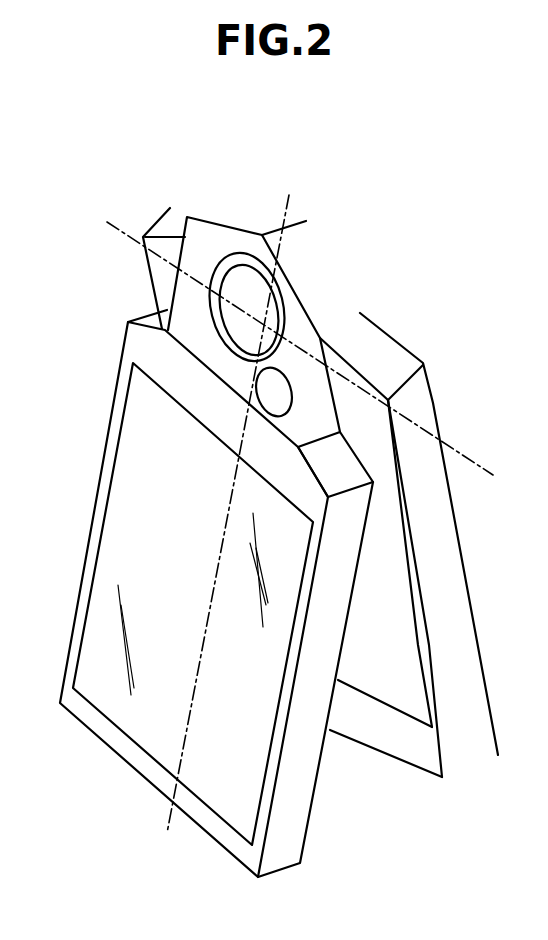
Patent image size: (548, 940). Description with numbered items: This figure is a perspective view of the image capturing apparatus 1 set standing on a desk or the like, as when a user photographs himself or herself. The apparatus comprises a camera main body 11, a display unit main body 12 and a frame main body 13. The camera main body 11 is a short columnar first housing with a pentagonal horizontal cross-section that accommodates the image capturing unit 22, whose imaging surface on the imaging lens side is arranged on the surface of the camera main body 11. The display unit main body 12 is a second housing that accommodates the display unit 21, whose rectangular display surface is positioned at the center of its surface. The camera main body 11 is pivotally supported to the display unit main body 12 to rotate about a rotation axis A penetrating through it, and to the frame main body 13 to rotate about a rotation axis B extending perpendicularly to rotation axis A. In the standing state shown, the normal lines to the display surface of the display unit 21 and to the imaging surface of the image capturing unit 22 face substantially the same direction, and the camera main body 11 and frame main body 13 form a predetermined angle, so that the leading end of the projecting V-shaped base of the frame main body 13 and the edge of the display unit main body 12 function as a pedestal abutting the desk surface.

The image capturing apparatus 1 is at (417, 181).
The camera main body 11 is at (213, 241).
The display unit main body 12 is at (297, 820).
The frame main body 13 is at (423, 407).
The display unit 21 is at (125, 563).
The image capturing unit 22 is at (236, 272).
The rotation axis A is at (285, 191).
The rotation axis B is at (127, 233).